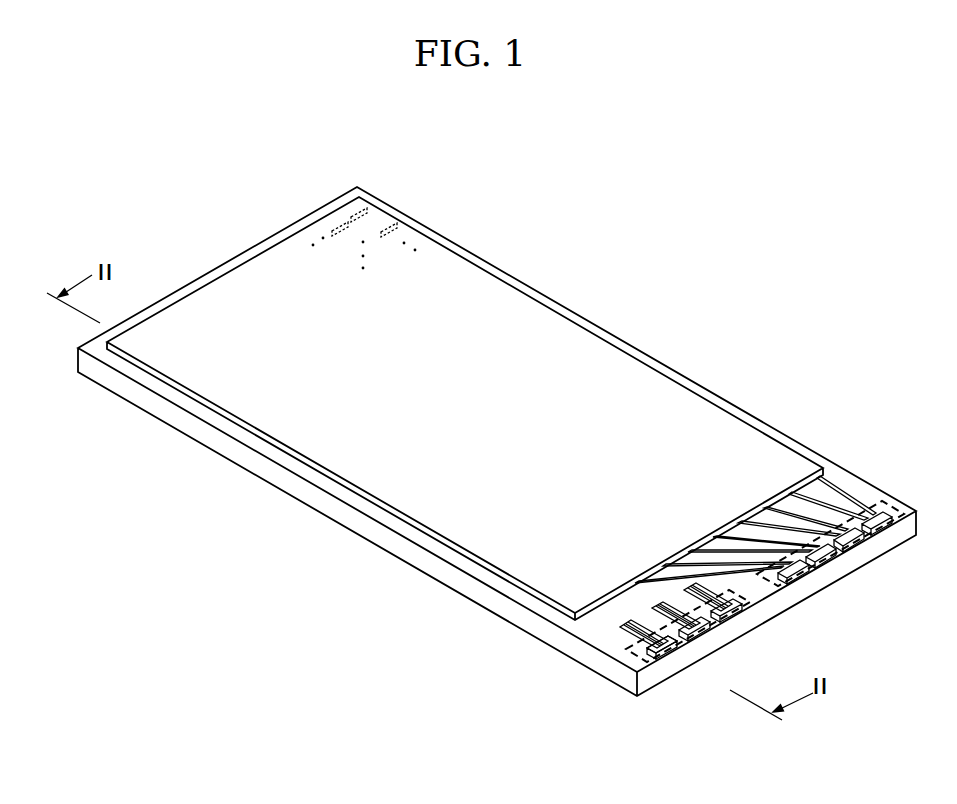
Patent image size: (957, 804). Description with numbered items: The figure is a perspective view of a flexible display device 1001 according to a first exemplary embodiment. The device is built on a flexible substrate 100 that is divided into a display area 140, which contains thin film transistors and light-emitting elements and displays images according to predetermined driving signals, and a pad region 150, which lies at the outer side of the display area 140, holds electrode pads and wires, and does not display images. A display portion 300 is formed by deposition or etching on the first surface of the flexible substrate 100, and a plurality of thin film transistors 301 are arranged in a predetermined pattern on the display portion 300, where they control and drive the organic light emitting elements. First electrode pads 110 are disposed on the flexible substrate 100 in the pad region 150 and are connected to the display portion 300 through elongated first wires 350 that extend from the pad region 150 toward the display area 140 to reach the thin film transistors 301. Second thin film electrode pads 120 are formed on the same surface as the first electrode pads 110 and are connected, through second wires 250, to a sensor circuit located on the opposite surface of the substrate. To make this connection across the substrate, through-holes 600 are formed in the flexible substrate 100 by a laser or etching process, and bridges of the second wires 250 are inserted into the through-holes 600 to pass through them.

The flexible display device 1001 is at (561, 236).
The flexible substrate 100 is at (292, 483).
The first electrode pads 110 is at (797, 573).
The second thin film electrode pads 120 is at (727, 611).
The display area 140 is at (357, 187).
The pad region 150 is at (838, 464).
The second wires 250 is at (627, 644).
The display portion 300 is at (397, 487).
The thin film transistors 301 is at (352, 210).
The first wires 350 is at (838, 484).
The through-holes 600 is at (617, 632).